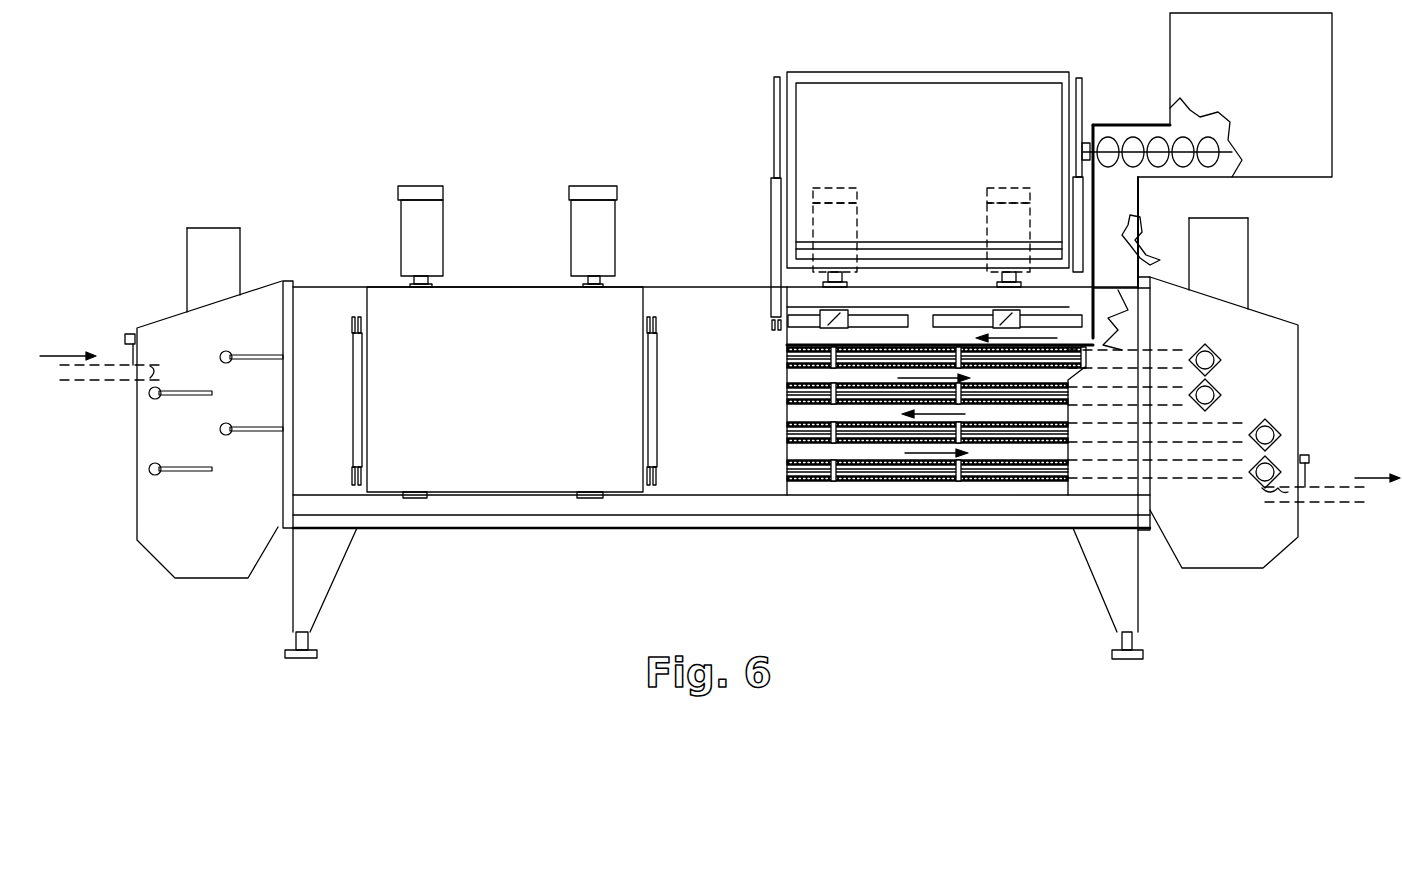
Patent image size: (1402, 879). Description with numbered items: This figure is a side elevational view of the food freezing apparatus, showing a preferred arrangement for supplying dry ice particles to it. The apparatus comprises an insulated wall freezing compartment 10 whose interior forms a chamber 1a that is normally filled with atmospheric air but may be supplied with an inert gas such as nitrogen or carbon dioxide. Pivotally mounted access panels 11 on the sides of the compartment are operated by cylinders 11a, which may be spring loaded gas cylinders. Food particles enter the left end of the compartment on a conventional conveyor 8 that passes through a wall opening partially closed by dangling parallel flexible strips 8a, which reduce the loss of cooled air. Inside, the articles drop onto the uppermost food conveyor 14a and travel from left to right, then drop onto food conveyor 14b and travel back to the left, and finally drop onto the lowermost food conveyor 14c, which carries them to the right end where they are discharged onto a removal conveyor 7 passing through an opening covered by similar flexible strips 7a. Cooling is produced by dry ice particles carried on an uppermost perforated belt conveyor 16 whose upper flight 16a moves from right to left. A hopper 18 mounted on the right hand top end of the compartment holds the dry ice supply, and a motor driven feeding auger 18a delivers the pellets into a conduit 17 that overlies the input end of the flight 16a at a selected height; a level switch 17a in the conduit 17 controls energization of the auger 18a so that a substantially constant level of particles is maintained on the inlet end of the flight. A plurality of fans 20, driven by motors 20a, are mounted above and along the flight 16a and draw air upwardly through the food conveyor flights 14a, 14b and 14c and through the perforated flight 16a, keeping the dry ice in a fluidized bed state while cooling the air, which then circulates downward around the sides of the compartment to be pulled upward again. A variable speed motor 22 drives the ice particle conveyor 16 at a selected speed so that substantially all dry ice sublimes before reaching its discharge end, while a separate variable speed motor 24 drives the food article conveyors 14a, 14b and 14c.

The chamber 1a is at (912, 343).
The removal conveyor 7 is at (1322, 487).
The dangling parallel flexible strips 7a is at (1306, 476).
The conveyor 8 is at (108, 358).
The dangling parallel flexible strips 8a is at (129, 352).
The insulated wall freezing compartment 10 is at (673, 442).
The access panels 11 is at (497, 405).
The cylinders 11a is at (353, 406).
The uppermost food conveyor 14a is at (800, 384).
The food conveyor 14b is at (800, 424).
The lowermost food conveyor 14c is at (800, 460).
The perforated belt conveyor 16 is at (785, 360).
The upper flight 16a is at (1116, 320).
The conduit 17 is at (1125, 198).
The level switch 17a is at (1140, 218).
The hopper 18 is at (1242, 80).
The feeding auger 18a is at (1132, 135).
The fans 20 is at (862, 312).
The motors 20a is at (420, 195).
The variable speed motor 22 is at (1209, 268).
The variable speed motor 24 is at (200, 268).